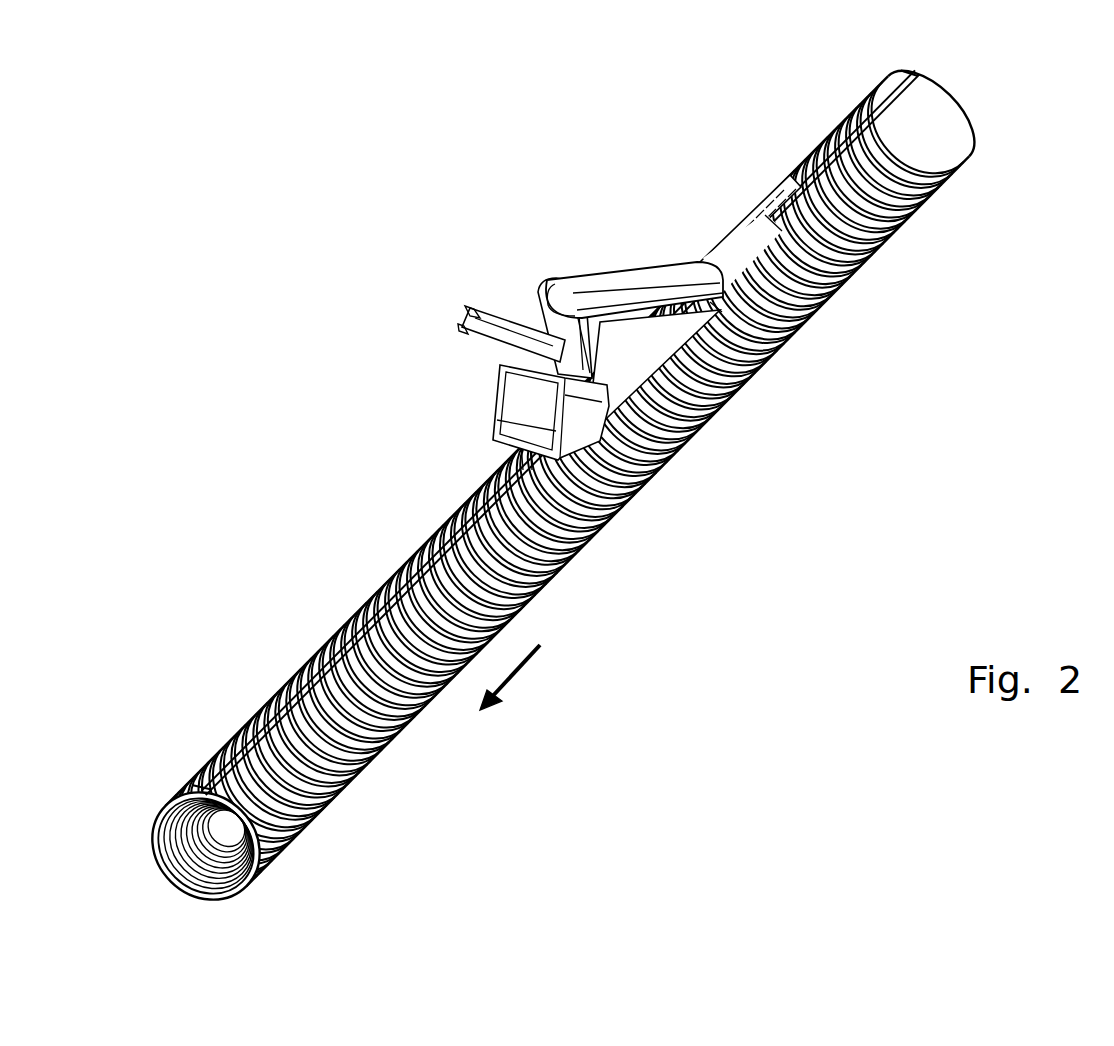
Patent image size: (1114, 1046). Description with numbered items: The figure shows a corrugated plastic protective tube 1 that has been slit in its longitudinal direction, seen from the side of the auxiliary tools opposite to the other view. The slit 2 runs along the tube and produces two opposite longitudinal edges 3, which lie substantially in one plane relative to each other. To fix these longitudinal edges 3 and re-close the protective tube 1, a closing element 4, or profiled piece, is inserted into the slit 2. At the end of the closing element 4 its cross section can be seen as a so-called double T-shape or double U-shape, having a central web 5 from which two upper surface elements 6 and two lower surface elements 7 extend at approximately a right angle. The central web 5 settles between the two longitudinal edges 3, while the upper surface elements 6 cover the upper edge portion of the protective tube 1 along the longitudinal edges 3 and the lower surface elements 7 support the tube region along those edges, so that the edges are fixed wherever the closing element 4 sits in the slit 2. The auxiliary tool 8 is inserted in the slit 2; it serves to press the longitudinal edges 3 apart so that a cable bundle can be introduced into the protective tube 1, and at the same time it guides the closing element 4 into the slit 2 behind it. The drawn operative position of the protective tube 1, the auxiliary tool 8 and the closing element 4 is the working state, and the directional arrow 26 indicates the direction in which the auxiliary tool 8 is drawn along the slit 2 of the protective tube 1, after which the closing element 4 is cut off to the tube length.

The protective tube 1 is at (363, 604).
The slit 2 is at (228, 765).
The longitudinal edges 3 is at (917, 70).
The closing element 4 is at (743, 243).
The central web 5 is at (469, 318).
The upper surface elements 6 is at (471, 308).
The lower surface elements 7 is at (459, 327).
The auxiliary tool 8 is at (619, 258).
The directional arrow 26 is at (517, 680).